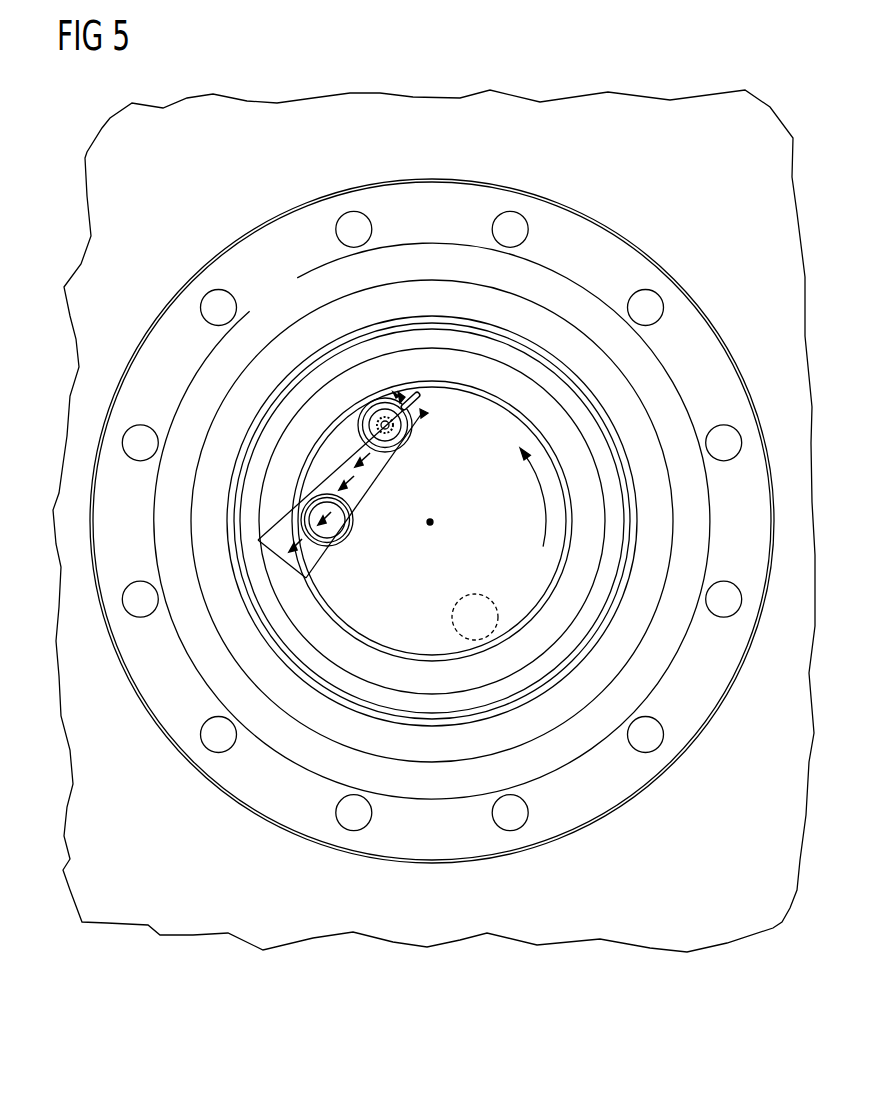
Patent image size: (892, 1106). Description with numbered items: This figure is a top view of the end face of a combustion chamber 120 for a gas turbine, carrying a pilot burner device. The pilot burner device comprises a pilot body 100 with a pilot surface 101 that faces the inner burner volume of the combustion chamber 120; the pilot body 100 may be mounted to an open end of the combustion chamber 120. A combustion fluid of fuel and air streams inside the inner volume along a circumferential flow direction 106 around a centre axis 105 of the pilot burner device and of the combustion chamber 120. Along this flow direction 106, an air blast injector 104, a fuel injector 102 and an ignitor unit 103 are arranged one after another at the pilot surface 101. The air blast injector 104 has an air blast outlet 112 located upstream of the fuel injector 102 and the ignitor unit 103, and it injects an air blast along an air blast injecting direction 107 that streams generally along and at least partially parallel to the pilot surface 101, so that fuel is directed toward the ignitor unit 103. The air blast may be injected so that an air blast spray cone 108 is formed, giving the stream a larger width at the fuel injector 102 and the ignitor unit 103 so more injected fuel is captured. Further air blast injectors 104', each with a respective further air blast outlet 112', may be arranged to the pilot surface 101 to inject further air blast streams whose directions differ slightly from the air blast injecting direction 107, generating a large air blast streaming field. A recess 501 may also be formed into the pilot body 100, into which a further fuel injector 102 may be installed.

The pilot body 100 is at (663, 197).
The pilot surface 101 is at (443, 604).
The fuel injector 102 is at (413, 441).
The ignitor unit 103 is at (353, 528).
The air blast injector 104 is at (433, 345).
The further air blast injectors 104' is at (328, 329).
The centre axis 105 is at (433, 524).
The flow direction 106 is at (538, 490).
The air blast injecting direction 107 is at (354, 478).
The air blast spray cone 108 is at (320, 565).
The air blast outlet 112 is at (451, 343).
The further air blast outlet 112' is at (403, 361).
The combustion chamber 120 is at (694, 901).
The recess 501 is at (494, 602).